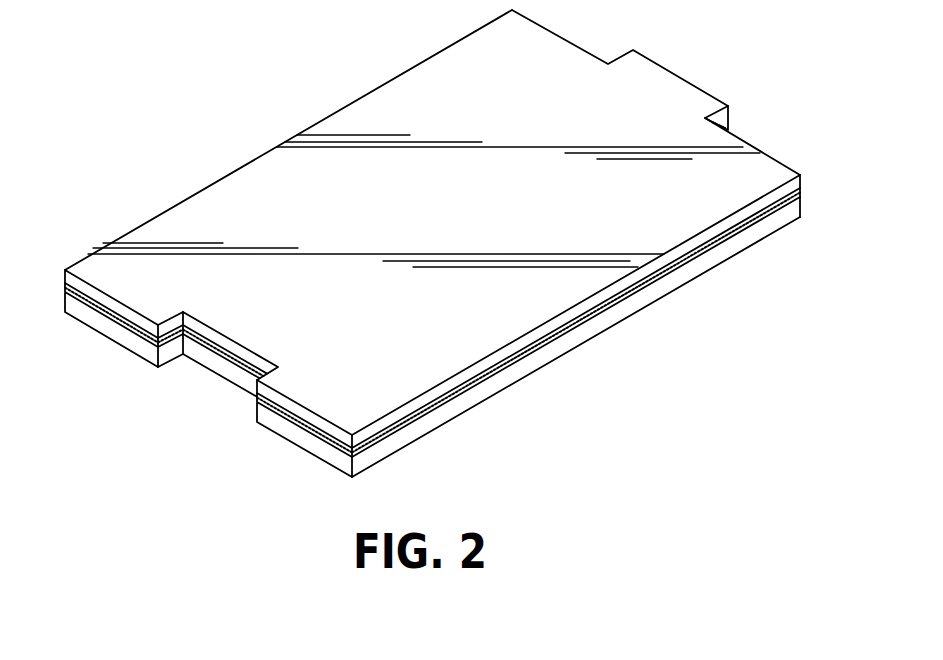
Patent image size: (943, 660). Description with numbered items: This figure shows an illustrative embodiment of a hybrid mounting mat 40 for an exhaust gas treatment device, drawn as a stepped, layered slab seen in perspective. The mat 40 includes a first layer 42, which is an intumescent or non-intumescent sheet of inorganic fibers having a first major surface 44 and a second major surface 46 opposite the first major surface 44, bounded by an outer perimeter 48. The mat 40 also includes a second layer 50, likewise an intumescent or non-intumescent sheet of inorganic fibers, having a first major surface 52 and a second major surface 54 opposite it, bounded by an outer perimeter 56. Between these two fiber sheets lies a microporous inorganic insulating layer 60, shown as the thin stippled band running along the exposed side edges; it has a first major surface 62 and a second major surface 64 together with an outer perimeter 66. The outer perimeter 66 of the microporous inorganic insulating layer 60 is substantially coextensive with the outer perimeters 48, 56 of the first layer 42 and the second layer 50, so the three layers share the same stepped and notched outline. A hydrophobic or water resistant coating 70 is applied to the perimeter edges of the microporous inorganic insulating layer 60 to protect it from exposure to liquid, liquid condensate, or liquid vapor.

The hybrid mounting mat 40 is at (233, 128).
The first layer 42 is at (457, 211).
The first major surface 44 is at (128, 233).
The second major surface 46 is at (87, 302).
The outer perimeter 48 is at (63, 283).
The second layer 50 is at (698, 263).
The first major surface 52 is at (413, 412).
The second major surface 54 is at (638, 313).
The outer perimeter 56 is at (802, 203).
The microporous inorganic insulating layer 60 is at (178, 330).
The first major surface 62 is at (268, 402).
The second major surface 64 is at (308, 430).
The outer perimeter 66 is at (355, 448).
The hydrophobic or water resistant coating 70 is at (730, 118).